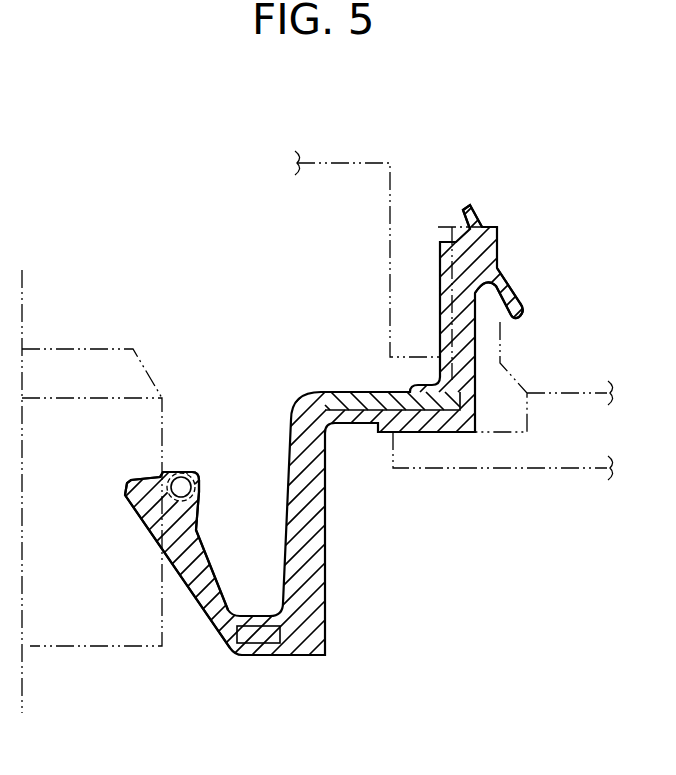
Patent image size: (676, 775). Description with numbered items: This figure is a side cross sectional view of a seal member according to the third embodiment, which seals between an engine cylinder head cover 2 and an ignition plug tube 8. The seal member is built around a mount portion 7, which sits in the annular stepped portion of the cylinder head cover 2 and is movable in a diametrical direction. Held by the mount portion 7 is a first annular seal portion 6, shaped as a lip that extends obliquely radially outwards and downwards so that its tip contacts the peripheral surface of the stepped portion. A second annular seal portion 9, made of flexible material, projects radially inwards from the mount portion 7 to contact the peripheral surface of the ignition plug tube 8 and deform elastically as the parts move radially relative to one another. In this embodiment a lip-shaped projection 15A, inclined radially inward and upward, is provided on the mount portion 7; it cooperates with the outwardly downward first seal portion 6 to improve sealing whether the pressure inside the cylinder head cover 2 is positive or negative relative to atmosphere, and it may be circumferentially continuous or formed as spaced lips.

The cylinder head cover 2 is at (340, 160).
The first annular seal portion 6 is at (523, 308).
The mount portion 7 is at (460, 345).
The ignition plug tube 8 is at (75, 633).
The second annular seal portion 9 is at (203, 617).
The projection 15A is at (474, 207).